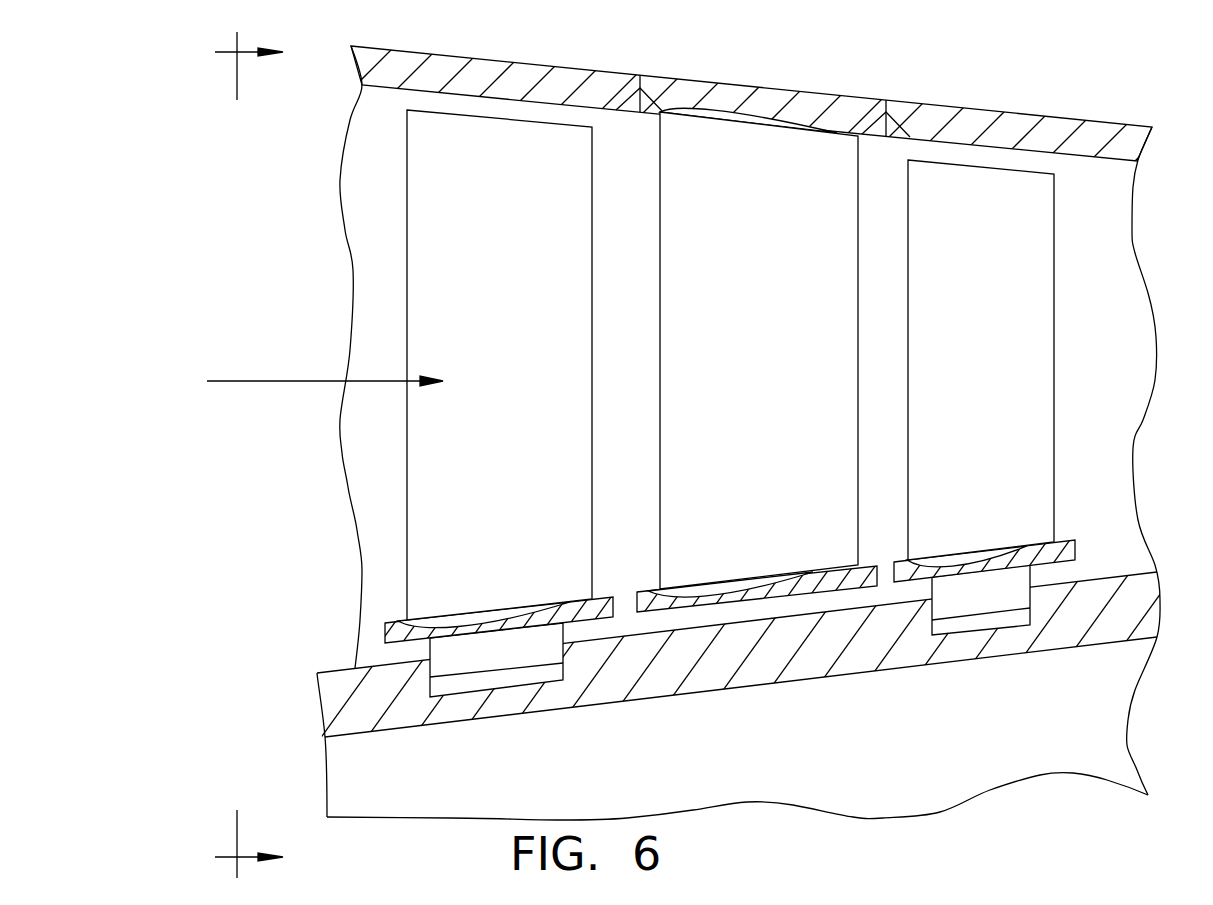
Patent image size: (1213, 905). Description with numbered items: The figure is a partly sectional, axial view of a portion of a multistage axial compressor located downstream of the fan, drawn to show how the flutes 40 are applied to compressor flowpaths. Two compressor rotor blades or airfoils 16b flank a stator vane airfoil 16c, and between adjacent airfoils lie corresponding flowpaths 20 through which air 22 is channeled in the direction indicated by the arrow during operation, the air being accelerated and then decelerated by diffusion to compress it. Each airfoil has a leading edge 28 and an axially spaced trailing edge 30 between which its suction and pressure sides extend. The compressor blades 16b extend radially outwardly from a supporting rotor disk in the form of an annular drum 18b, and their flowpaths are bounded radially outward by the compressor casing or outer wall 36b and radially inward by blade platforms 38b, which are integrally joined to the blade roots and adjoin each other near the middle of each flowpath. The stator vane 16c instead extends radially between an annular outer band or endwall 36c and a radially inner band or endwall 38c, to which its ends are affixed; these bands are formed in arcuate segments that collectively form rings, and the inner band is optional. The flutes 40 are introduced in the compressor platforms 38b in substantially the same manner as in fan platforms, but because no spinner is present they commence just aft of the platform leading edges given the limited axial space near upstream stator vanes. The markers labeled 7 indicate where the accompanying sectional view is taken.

The section line for FIG. 7 is at (249, 455).
The compressor rotor blade 16b is at (521, 362).
The stator vane airfoil 16c is at (770, 364).
The annular drum 18b is at (722, 677).
The flowpath 20 is at (396, 221).
The air 22 is at (285, 381).
The leading edge 28 is at (407, 151).
The trailing edge 30 is at (592, 171).
The compressor casing 36b is at (461, 97).
The annular outer band 36c is at (810, 92).
The compressor blade platform 38b is at (568, 600).
The inner band 38c is at (813, 583).
The flute 40 is at (723, 112).